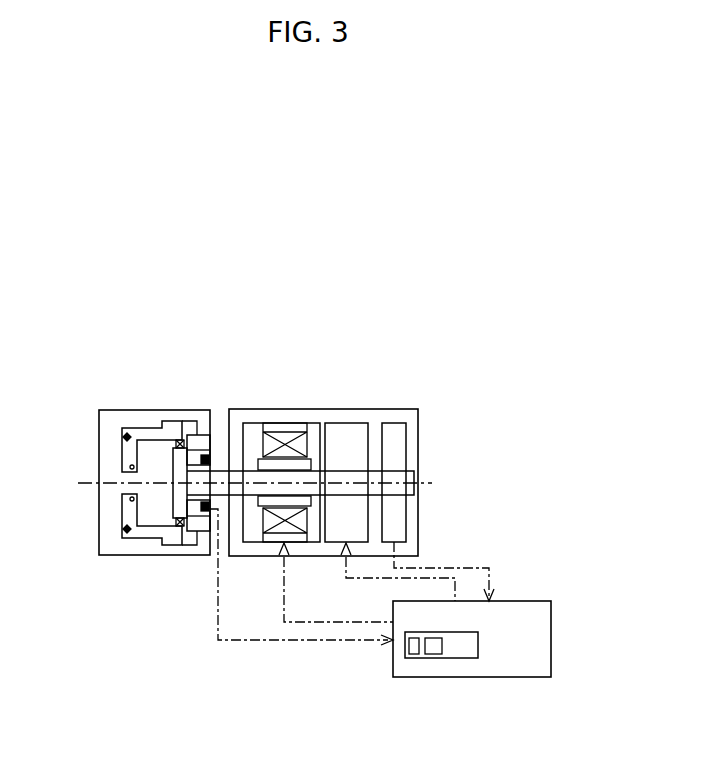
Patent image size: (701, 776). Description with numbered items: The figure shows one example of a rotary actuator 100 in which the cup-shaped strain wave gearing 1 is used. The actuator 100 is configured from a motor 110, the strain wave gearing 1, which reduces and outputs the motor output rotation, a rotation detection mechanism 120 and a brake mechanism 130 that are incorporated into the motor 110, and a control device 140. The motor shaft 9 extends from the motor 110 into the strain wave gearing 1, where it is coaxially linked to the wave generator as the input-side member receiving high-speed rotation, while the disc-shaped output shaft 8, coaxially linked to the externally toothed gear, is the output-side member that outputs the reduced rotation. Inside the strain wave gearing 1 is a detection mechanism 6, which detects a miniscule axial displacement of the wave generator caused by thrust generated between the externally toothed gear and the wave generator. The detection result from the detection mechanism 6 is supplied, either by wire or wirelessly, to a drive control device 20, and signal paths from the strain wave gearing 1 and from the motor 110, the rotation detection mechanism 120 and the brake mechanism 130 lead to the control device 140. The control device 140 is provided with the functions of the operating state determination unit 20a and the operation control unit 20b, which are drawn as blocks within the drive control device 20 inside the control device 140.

The strain wave gearing 1 is at (129, 458).
The detection mechanism 6 is at (190, 515).
The output shaft 8 is at (118, 460).
The motor shaft 9 is at (221, 470).
The actuator 100 is at (407, 358).
The motor 110 is at (287, 407).
The rotation detection mechanism 120 is at (393, 416).
The brake mechanism 130 is at (346, 421).
The control device 140 is at (481, 637).
The drive control device 20 is at (430, 696).
The operating state determination unit 20a is at (412, 658).
The operation control unit 20b is at (432, 658).